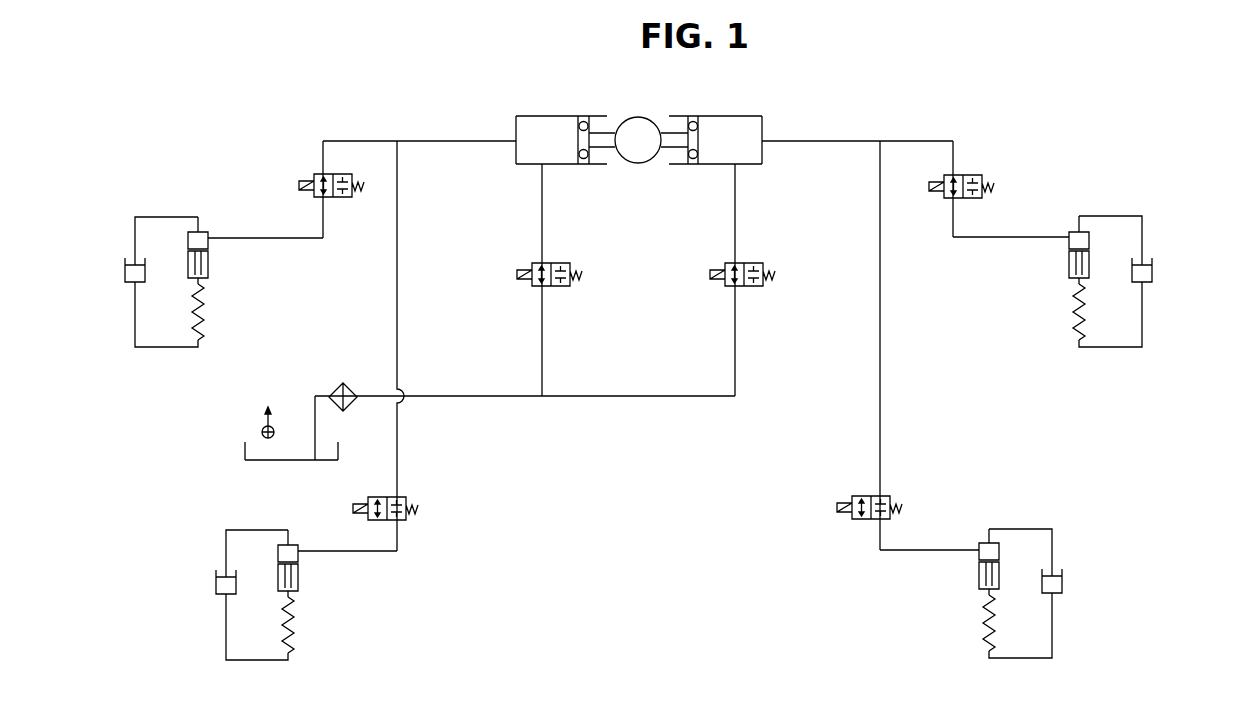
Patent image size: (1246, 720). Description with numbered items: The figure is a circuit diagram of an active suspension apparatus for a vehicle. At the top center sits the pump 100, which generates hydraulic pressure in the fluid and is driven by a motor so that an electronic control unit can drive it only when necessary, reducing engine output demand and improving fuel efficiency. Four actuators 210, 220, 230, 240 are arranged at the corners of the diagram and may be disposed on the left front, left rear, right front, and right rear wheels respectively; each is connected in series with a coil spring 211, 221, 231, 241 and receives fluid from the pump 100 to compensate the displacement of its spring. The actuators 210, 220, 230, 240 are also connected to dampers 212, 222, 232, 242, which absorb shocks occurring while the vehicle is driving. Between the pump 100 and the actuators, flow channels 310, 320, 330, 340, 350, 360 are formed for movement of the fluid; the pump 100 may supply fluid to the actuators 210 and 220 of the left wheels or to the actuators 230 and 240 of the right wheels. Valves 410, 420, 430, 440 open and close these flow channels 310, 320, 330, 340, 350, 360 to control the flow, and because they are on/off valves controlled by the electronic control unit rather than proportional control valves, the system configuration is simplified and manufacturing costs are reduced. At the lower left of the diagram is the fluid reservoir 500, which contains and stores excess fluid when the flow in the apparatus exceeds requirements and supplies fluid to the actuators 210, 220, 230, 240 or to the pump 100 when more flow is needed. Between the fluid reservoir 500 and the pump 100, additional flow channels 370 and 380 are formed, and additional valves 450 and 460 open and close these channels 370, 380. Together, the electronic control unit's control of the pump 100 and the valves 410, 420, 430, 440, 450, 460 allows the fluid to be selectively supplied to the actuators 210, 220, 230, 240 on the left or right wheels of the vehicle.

The pump 100 is at (566, 116).
The actuator 210 is at (190, 232).
The coil spring 211 is at (205, 335).
The damper 212 is at (125, 272).
The actuator 220 is at (278, 550).
The coil spring 221 is at (293, 640).
The damper 222 is at (216, 588).
The actuator 230 is at (1078, 232).
The coil spring 231 is at (1072, 318).
The damper 232 is at (1152, 275).
The actuator 240 is at (995, 545).
The coil spring 241 is at (985, 630).
The damper 242 is at (1062, 592).
The flow channel 310 is at (455, 140).
The flow channel 320 is at (362, 140).
The flow channel 330 is at (397, 303).
The flow channel 340 is at (821, 140).
The flow channel 350 is at (918, 140).
The flow channel 360 is at (880, 362).
The additional flow channel 370 is at (542, 338).
The additional flow channel 380 is at (735, 338).
The valve 410 is at (313, 175).
The valve 420 is at (406, 512).
The valve 430 is at (960, 175).
The valve 440 is at (886, 496).
The additional valve 450 is at (533, 266).
The additional valve 460 is at (725, 266).
The fluid reservoir 500 is at (265, 412).